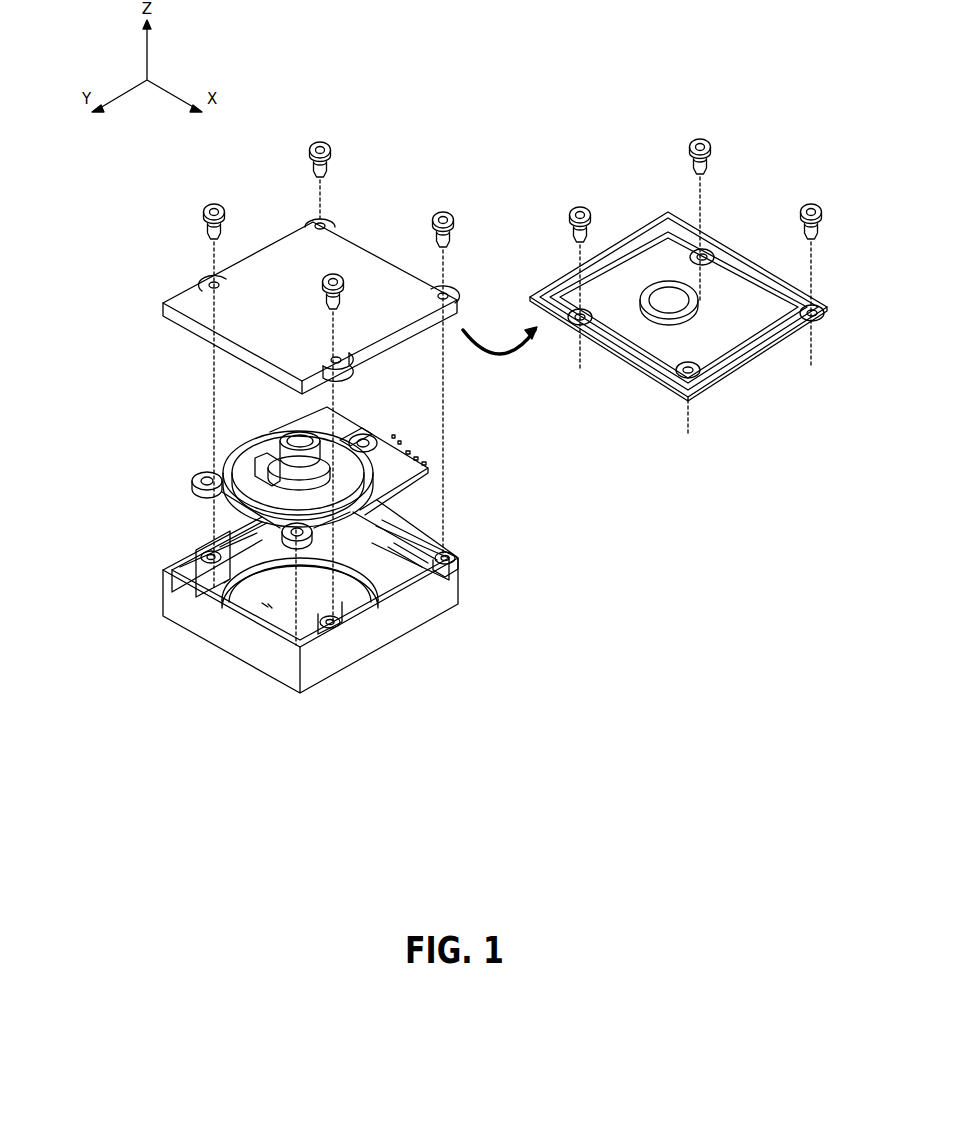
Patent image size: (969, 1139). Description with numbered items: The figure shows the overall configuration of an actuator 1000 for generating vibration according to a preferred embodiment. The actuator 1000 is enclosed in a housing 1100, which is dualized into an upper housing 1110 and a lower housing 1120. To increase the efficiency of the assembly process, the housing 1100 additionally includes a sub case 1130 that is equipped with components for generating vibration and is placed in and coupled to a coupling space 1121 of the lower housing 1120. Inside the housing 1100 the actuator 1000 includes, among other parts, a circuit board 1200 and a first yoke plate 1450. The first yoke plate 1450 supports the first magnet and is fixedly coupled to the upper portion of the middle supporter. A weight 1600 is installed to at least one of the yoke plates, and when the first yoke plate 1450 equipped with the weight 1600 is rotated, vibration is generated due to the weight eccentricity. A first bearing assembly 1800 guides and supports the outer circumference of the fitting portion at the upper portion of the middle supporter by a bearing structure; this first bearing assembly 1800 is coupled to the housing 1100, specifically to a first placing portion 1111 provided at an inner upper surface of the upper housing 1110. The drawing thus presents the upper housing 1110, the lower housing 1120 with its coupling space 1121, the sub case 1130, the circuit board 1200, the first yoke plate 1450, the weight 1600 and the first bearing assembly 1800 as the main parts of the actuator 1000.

The actuator for generating vibration 1000 is at (523, 172).
The housing 1100 is at (449, 461).
The upper housing 1110 is at (185, 300).
The first placing portion 1111 is at (650, 318).
The lower housing 1120 is at (205, 620).
The coupling space 1121 is at (256, 614).
The sub case 1130 is at (233, 516).
The circuit board 1200 is at (402, 445).
The first yoke plate 1450 is at (355, 432).
The weight 1600 is at (226, 455).
The first bearing assembly 1800 is at (282, 434).